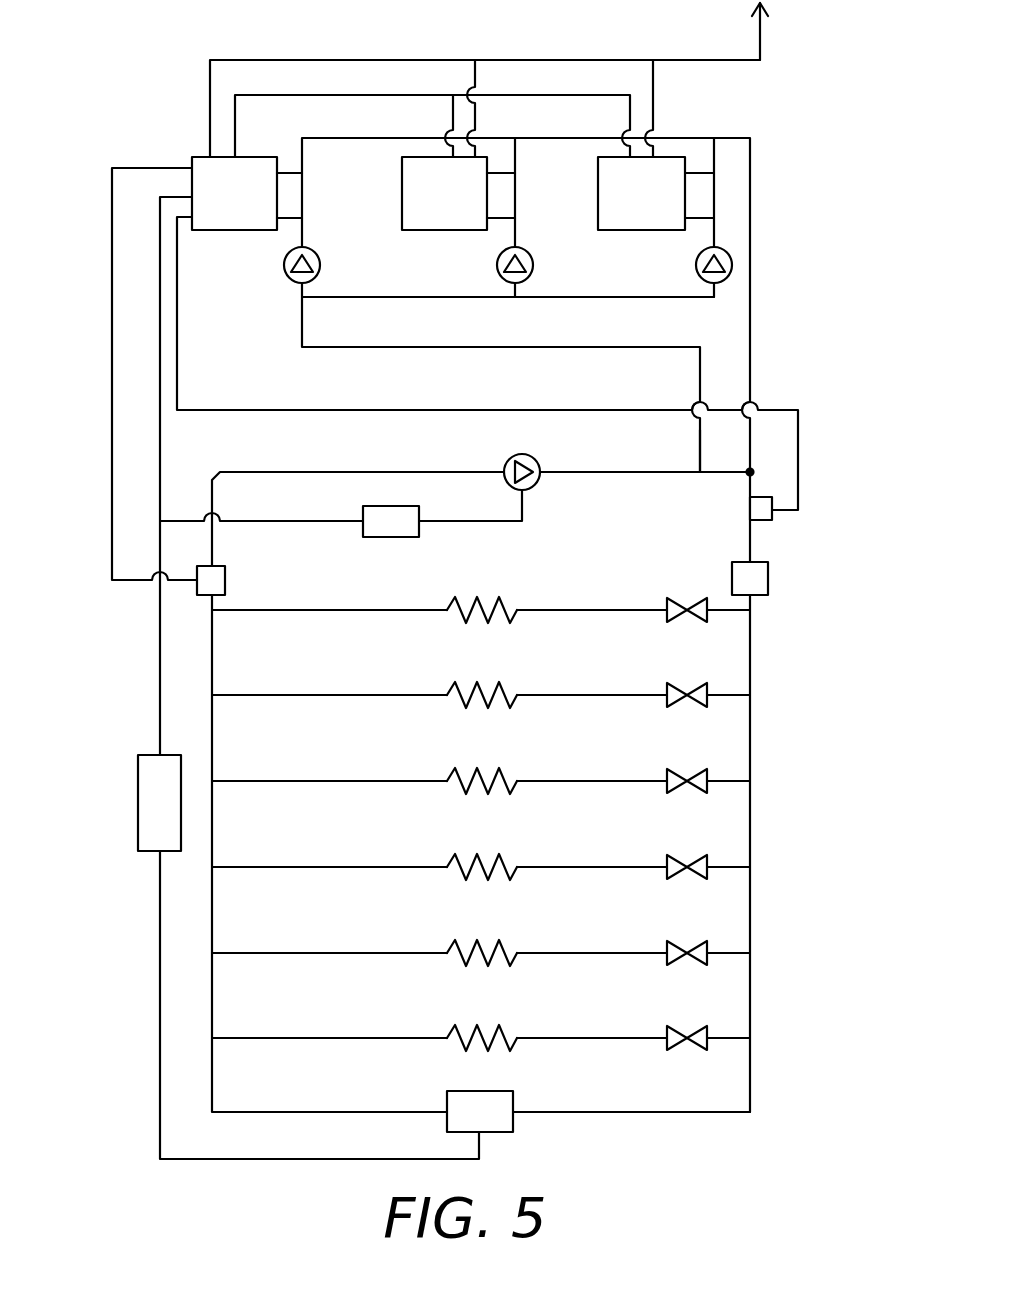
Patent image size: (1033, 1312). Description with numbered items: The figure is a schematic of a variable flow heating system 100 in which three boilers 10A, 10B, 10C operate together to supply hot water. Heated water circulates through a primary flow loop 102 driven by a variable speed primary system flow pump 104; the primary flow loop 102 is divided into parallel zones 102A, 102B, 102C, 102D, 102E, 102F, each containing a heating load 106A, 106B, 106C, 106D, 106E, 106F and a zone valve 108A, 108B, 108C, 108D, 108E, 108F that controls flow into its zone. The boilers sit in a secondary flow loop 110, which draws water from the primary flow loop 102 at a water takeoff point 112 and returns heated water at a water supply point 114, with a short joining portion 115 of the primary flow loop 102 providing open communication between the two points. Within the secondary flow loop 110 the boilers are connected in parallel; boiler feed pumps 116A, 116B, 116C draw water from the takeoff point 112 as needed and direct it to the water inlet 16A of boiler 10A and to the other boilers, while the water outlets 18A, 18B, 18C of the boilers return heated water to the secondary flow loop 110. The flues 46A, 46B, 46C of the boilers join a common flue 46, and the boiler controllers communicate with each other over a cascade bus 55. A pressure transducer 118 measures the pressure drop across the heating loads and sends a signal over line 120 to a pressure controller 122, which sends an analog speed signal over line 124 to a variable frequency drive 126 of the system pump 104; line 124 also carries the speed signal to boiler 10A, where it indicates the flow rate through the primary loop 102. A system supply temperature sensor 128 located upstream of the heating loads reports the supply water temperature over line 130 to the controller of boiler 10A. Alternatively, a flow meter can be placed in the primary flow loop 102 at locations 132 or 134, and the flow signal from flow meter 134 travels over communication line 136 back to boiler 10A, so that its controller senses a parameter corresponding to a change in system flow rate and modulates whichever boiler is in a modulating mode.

The variable flow heating system 100 is at (115, 107).
The common flue 46 is at (794, 53).
The flue 46A is at (342, 35).
The flue 46B is at (499, 120).
The flue 46C is at (684, 84).
The cascade bus 55 is at (430, 80).
The boiler 10A is at (277, 120).
The boiler 10B is at (401, 198).
The boiler 10C is at (597, 200).
The water outlet 18A is at (321, 187).
The water outlet 18B is at (511, 191).
The water outlet 18C is at (709, 191).
The water inlet 16A is at (321, 213).
The boiler feed pump 116A is at (349, 255).
The boiler feed pump 116B is at (562, 278).
The boiler feed pump 116C is at (666, 257).
The secondary flow loop 110 is at (719, 110).
The water takeoff point 112 is at (699, 470).
The water supply point 114 is at (749, 474).
The short joining portion 115 is at (720, 474).
The primary system flow pump 104 is at (564, 438).
The line 120 is at (114, 941).
The pressure controller 122 is at (152, 803).
The line 124 is at (212, 436).
The variable frequency drive 126 is at (375, 560).
The system supply temperature sensor 128 is at (807, 541).
The line 130 is at (349, 436).
The flow meter 132 is at (731, 578).
The flow meter 134 is at (269, 579).
The communication line 136 is at (70, 386).
The pressure transducer 118 is at (519, 1161).
The primary flow loop 102 is at (257, 813).
The zone 102A is at (579, 637).
The zone 102B is at (579, 722).
The zone 102C is at (579, 808).
The zone 102D is at (579, 894).
The zone 102E is at (579, 980).
The zone 102F is at (579, 1065).
The heating load 106A is at (514, 574).
The heating load 106B is at (514, 659).
The heating load 106C is at (514, 745).
The heating load 106D is at (514, 831).
The heating load 106E is at (514, 917).
The heating load 106F is at (514, 1002).
The zone valve 108A is at (687, 652).
The zone valve 108B is at (687, 737).
The zone valve 108C is at (687, 823).
The zone valve 108D is at (687, 909).
The zone valve 108E is at (687, 995).
The zone valve 108F is at (687, 1080).